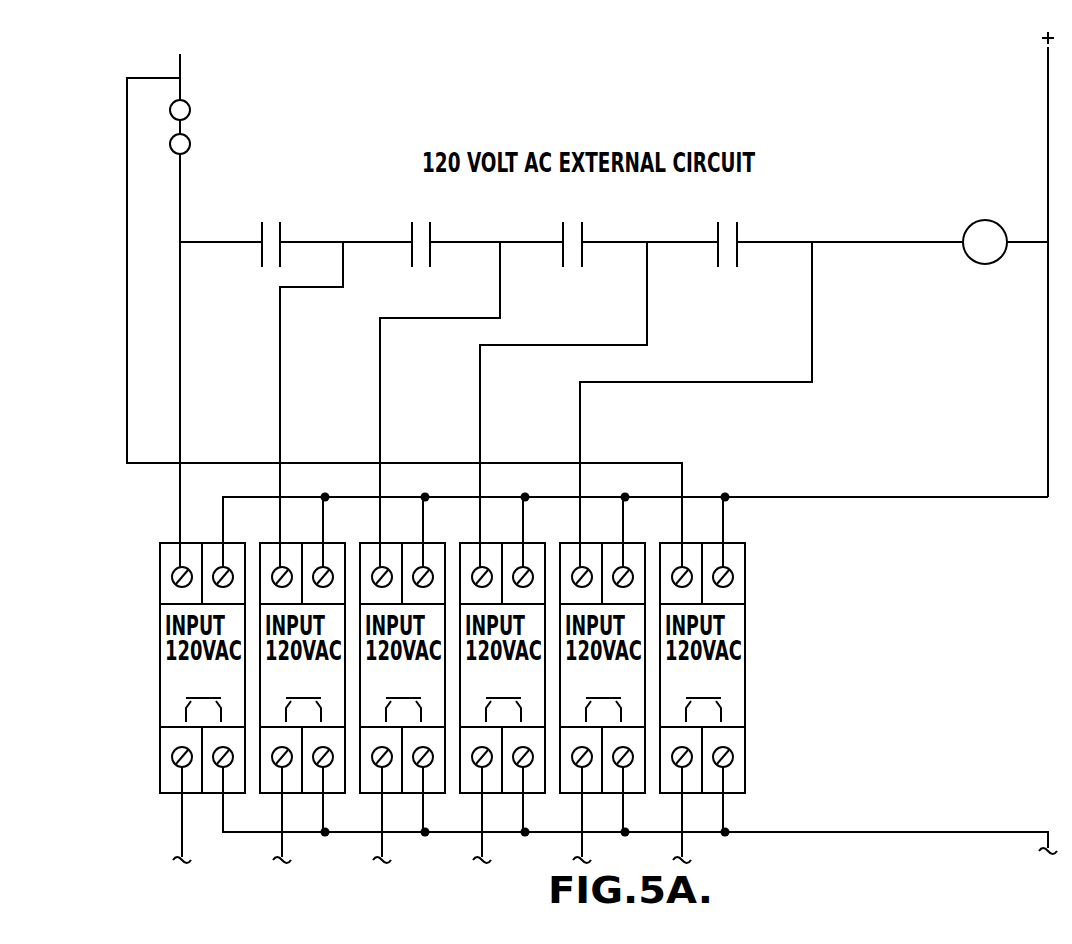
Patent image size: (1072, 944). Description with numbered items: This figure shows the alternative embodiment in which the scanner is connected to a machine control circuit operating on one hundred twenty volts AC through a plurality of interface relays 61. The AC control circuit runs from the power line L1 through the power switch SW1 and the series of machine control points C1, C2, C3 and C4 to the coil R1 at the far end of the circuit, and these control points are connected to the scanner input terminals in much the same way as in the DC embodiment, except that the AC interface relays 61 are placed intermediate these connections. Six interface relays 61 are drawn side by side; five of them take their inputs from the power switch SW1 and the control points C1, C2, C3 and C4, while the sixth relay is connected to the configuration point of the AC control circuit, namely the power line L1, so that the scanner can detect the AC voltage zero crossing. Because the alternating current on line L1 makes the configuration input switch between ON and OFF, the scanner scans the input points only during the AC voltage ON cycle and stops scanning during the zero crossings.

The interface relays 61 is at (136, 685).
The machine control point C1 is at (270, 227).
The machine control point C2 is at (419, 227).
The machine control point C3 is at (571, 227).
The machine control point C4 is at (724, 227).
The relay coil R1 is at (985, 242).
The machine control point SW1 is at (270, 128).
The power line L1 is at (180, 63).